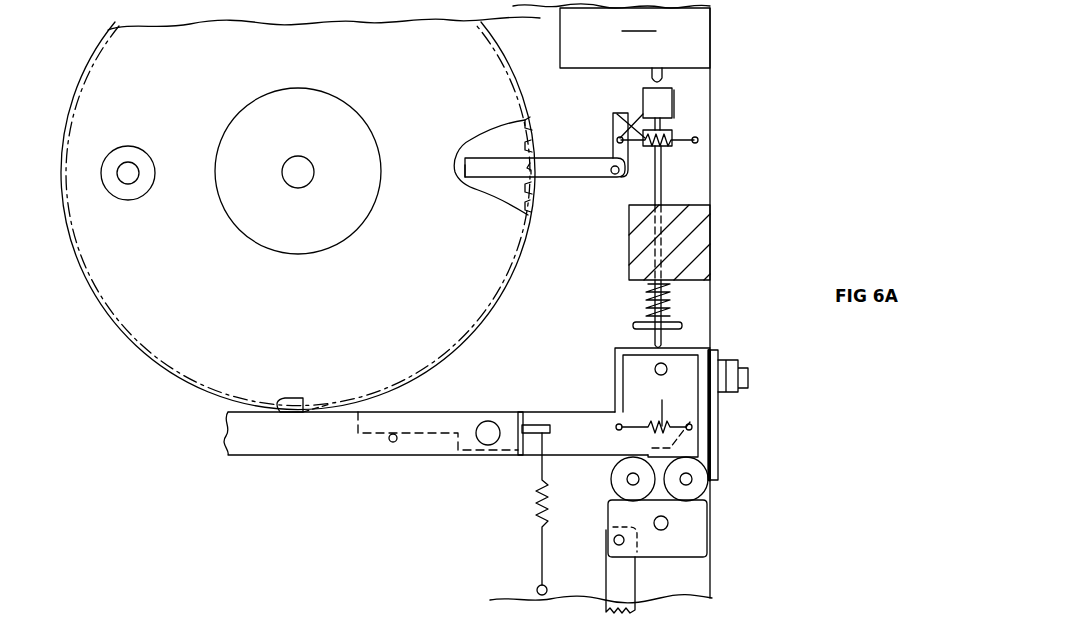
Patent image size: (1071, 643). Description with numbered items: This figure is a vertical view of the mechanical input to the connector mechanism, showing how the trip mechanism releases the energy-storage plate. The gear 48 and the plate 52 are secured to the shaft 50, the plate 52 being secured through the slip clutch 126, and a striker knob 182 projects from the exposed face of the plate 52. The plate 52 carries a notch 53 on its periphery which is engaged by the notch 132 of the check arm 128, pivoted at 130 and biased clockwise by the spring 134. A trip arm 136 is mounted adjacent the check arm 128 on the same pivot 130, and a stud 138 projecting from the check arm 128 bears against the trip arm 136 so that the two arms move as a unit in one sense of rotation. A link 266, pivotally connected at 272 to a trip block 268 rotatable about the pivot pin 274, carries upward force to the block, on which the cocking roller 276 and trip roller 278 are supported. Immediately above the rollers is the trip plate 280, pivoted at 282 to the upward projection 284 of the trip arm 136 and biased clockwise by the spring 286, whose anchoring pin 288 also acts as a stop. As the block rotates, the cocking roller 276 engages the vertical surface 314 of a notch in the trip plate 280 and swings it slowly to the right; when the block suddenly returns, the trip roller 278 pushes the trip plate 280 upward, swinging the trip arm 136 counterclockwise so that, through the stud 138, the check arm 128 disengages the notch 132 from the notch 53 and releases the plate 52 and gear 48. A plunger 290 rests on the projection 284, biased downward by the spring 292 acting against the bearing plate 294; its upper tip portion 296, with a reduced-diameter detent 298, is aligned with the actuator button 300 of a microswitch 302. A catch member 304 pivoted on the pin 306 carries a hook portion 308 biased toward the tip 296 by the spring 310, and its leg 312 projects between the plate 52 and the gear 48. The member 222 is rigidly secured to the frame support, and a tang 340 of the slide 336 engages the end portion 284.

The gear 48 is at (507, 147).
The shaft 50 is at (306, 166).
The plate 52 is at (145, 328).
The notch 53 is at (300, 400).
The slip clutch 126 is at (360, 118).
The check arm 128 is at (276, 448).
The pivot 130 is at (486, 445).
The notch 132 is at (308, 408).
The spring 134 is at (538, 513).
The trip arm 136 is at (532, 442).
The stud 138 is at (392, 443).
The striker knob 182 is at (132, 171).
The member 222 is at (692, 203).
The link 266 is at (615, 572).
The trip block 268 is at (655, 548).
The pivot connection 272 is at (614, 541).
The pivot pin 274 is at (668, 525).
The cocking roller 276 is at (613, 478).
The trip roller 278 is at (706, 482).
The trip plate 280 is at (698, 366).
The pivot 282 is at (654, 368).
The upward projection 284 is at (616, 350).
The spring 286 is at (660, 403).
The pin 288 is at (619, 423).
The plunger 290 is at (663, 180).
The spring 292 is at (668, 298).
The bearing plate 294 is at (682, 324).
The tip portion 296 is at (674, 95).
The detent 298 is at (674, 128).
The actuator button 300 is at (687, 57).
The microswitch 302 is at (635, 38).
The catch member 304 is at (575, 160).
The pin 306 is at (613, 176).
The hook portion 308 is at (628, 124).
The spring 310 is at (628, 118).
The leg 312 is at (472, 176).
The vertical surface 314 is at (716, 422).
The slide 336 is at (722, 432).
The tang 340 is at (703, 453).